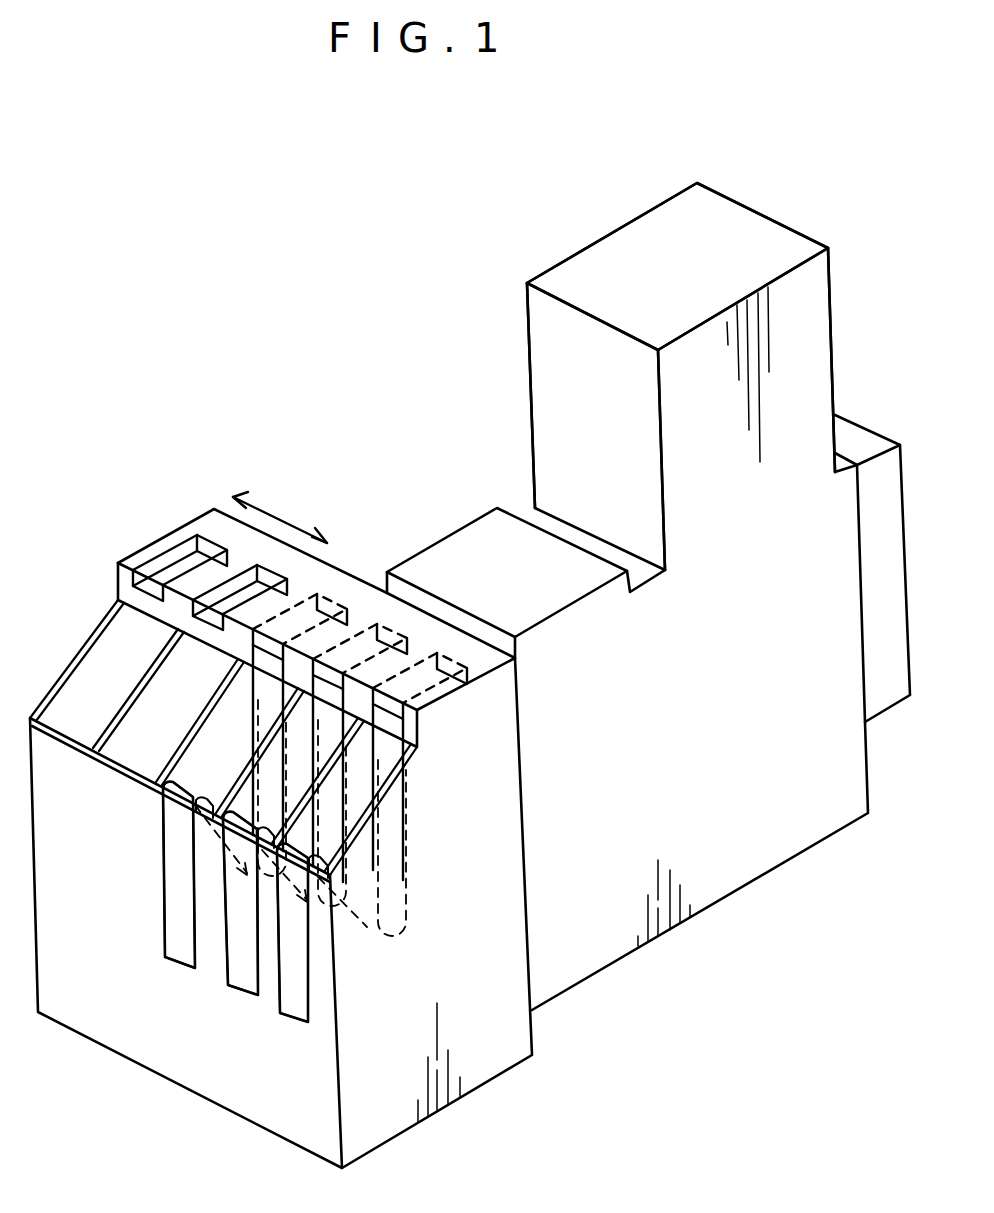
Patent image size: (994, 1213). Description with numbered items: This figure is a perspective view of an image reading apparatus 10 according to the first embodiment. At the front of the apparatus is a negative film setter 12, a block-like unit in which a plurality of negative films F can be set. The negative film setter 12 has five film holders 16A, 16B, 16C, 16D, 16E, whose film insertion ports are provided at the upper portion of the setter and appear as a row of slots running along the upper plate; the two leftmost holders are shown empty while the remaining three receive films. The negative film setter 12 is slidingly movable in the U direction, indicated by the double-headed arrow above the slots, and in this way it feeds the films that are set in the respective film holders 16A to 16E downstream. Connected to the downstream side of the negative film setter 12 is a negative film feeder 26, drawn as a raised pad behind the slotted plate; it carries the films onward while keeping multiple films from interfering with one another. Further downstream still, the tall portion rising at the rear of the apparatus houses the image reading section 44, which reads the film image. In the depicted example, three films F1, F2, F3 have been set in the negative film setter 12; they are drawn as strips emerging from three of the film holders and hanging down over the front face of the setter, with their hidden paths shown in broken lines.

The image reading apparatus 10 is at (792, 152).
The negative film setter 12 is at (497, 1062).
The film holder 16A is at (450, 645).
The film holder 16B is at (389, 620).
The film holder 16C is at (334, 588).
The film holder 16D is at (252, 556).
The film holder 16E is at (206, 535).
The negative film feeder 26 is at (540, 611).
The image reading section 44 is at (812, 348).
The U direction U is at (300, 525).
The negative film F is at (318, 1093).
The film F1 is at (290, 1012).
The film F2 is at (233, 983).
The film F3 is at (180, 955).